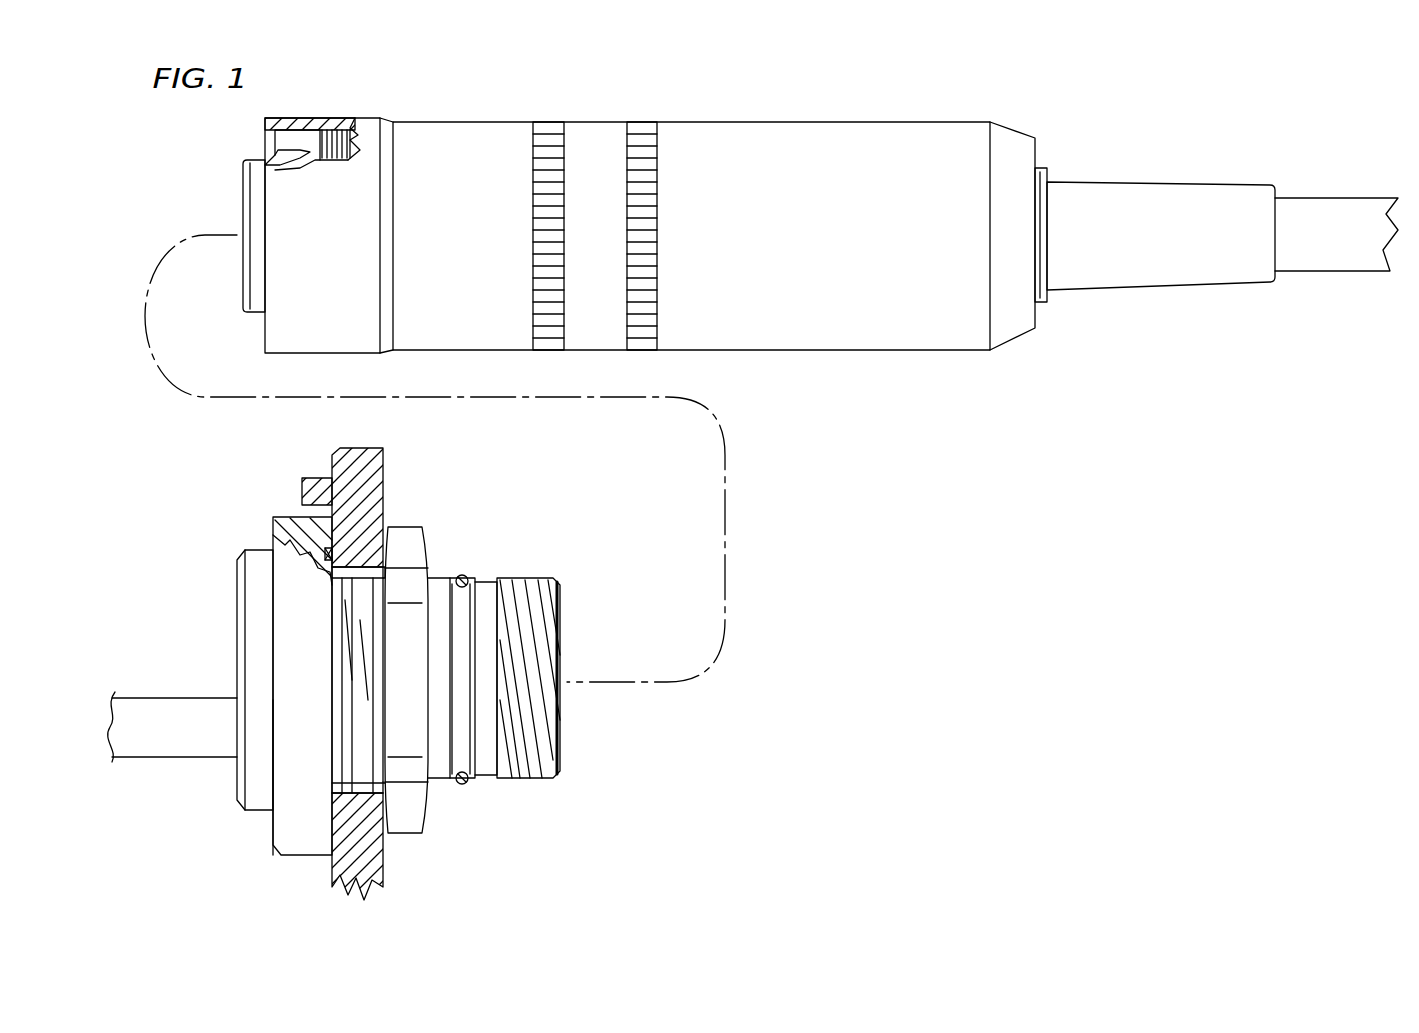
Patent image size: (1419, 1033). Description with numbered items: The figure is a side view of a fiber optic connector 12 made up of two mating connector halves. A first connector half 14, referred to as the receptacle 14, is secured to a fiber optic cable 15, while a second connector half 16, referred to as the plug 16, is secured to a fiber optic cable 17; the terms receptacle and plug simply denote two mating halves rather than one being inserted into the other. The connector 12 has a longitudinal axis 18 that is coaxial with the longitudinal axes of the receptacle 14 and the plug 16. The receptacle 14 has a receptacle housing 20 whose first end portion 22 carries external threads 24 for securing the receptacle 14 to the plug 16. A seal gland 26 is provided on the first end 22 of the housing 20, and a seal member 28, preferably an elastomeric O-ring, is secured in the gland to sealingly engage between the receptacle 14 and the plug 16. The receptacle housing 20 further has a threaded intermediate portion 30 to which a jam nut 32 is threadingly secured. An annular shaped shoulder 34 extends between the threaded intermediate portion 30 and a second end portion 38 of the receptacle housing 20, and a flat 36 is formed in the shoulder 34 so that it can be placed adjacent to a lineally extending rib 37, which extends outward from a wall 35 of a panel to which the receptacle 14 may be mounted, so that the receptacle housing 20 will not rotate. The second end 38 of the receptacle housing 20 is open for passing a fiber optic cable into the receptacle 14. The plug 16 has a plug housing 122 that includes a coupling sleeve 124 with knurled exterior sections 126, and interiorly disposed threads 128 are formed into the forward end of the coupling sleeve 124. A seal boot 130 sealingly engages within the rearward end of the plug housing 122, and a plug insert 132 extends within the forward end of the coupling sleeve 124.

The fiber optic connector 12 is at (790, 256).
The first connector half (receptacle) 14 is at (365, 659).
The fiber optic cable 15 is at (168, 702).
The second connector half (plug) 16 is at (1009, 118).
The fiber optic cable 17 is at (1312, 205).
The longitudinal axis 18 is at (726, 515).
The receptacle housing 20 is at (549, 677).
The first end portion 22 is at (553, 782).
The external threads 24 is at (527, 780).
The seal gland 26 is at (453, 603).
The seal member 28 is at (458, 576).
The threaded intermediate portion 30 is at (432, 783).
The jam nut 32 is at (402, 530).
The annular shaped shoulder 34 is at (292, 855).
The wall 35 is at (365, 450).
The flat 36 is at (285, 520).
The rib 37 is at (312, 480).
The second end portion 38 is at (252, 552).
The plug housing 122 is at (772, 116).
The coupling sleeve 124 is at (793, 345).
The knurled exterior sections 126 is at (641, 352).
The interiorly disposed threads 128 is at (323, 158).
The seal boot 130 is at (1130, 185).
The plug insert 132 is at (257, 318).